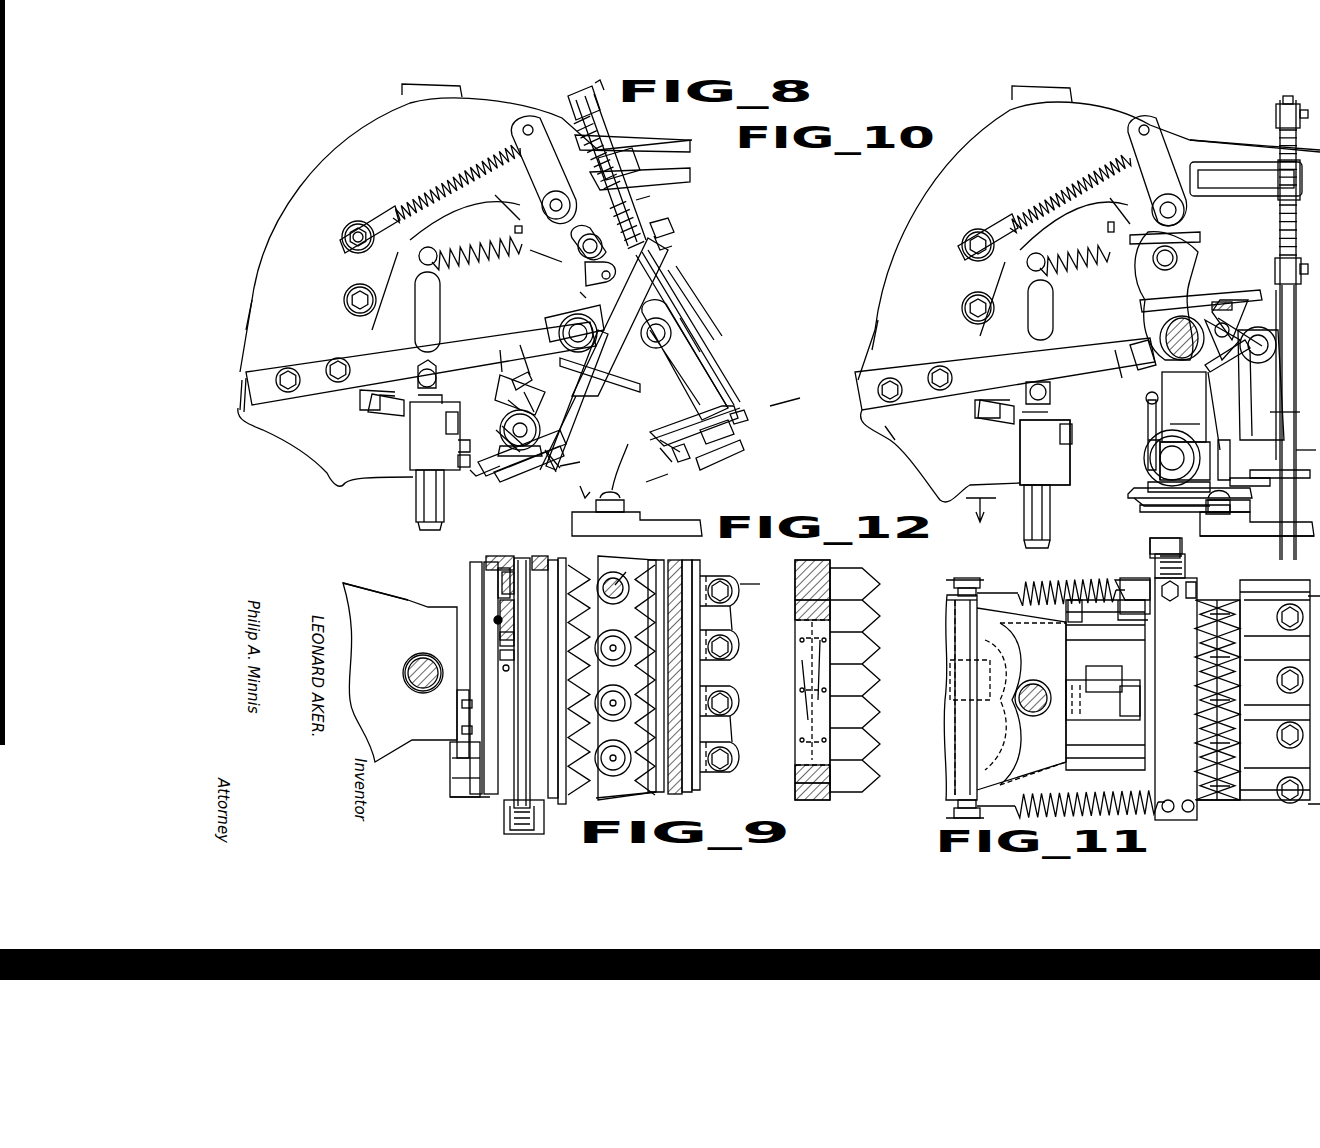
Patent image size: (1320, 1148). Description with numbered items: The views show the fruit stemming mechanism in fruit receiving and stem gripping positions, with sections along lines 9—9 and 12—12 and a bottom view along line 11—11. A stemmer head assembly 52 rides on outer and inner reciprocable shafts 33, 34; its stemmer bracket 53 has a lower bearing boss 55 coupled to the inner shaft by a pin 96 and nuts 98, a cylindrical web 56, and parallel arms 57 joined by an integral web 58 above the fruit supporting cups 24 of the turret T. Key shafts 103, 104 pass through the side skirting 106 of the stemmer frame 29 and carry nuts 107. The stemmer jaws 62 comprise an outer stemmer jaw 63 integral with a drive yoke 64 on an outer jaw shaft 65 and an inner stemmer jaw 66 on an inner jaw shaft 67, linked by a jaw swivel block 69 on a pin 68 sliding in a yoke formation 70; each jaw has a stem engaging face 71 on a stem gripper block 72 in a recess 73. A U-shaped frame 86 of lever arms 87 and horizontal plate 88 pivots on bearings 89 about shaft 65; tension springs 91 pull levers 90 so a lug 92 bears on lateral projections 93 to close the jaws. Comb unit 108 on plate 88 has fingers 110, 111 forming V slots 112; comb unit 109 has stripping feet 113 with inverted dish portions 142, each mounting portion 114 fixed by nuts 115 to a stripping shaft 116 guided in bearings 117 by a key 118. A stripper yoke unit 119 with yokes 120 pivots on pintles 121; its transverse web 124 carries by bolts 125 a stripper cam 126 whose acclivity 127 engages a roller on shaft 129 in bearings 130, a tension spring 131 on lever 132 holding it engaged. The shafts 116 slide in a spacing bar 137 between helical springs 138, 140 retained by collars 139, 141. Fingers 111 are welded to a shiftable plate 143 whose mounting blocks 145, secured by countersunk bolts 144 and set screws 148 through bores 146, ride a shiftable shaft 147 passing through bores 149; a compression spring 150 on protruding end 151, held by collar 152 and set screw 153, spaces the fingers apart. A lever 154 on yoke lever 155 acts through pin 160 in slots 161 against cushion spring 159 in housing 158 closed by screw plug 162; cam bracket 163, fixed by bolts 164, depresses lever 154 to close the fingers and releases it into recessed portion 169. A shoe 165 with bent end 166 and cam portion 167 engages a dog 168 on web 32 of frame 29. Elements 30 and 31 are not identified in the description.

In FIG. 8, the section line 9— 9 is at (786, 392).
In FIG. 10, the section line 11— 11 is at (981, 515).
In FIG. 8, the section line 12— 12 is at (586, 490).
In FIG. 8, the fruit supporting cups 24 is at (626, 504).
In FIG. 10, the fruit supporting cups 24 is at (1226, 506).
In FIG. 9, the fruit supporting cups 24 is at (618, 608).
In FIG. 8, the stemmer frame 29 is at (292, 236).
In FIG. 10, the stemmer frame 29 is at (893, 280).
In FIG. 12, the stemmer frame 29 is at (366, 586).
In FIG. 8, the mounting tab 30 is at (400, 92).
In FIG. 10, the mounting tab 30 is at (1012, 92).
In FIG. 8, the post 31 is at (412, 488).
In FIG. 10, the post 31 is at (1056, 468).
In FIG. 12, the post 31 is at (410, 668).
In FIG. 11, the post 31 is at (1018, 714).
In FIG. 8, the web 32 is at (384, 400).
In FIG. 10, the web 32 is at (984, 408).
In FIG. 12, the web 32 is at (362, 660).
In FIG. 11, the web 32 is at (950, 708).
In FIG. 8, the outer reciprocable shaft 33 is at (424, 500).
In FIG. 10, the outer reciprocable shaft 33 is at (1030, 510).
In FIG. 12, the outer reciprocable shaft 33 is at (428, 656).
In FIG. 11, the outer reciprocable shaft 33 is at (1034, 690).
In FIG. 8, the inner reciprocable shaft 34 is at (418, 522).
In FIG. 10, the inner reciprocable shaft 34 is at (1026, 538).
In FIG. 12, the inner reciprocable shaft 34 is at (430, 688).
In FIG. 11, the inner reciprocable shaft 34 is at (1030, 712).
In FIG. 8, the stemmer head assembly 52 is at (697, 316).
In FIG. 9, the stemmer head assembly 52 is at (500, 656).
In FIG. 11, the stemmer head assembly 52 is at (1276, 594).
In FIG. 8, the stemmer bracket 53 is at (486, 286).
In FIG. 10, the stemmer bracket 53 is at (992, 332).
In FIG. 10, the lower bearing boss 55 is at (1014, 402).
In FIG. 8, the cylindrical web 56 is at (395, 274).
In FIG. 10, the cylindrical web 56 is at (1000, 282).
In FIG. 11, the cylindrical web 56 is at (950, 656).
In FIG. 8, the parallel arms 57 is at (634, 311).
In FIG. 10, the parallel arms 57 is at (1116, 303).
In FIG. 11, the parallel arms 57 is at (1078, 644).
In FIG. 8, the integral web 58 is at (618, 281).
In FIG. 10, the integral web 58 is at (1222, 300).
In FIG. 8, the stemmer jaws 62 is at (586, 388).
In FIG. 10, the stemmer jaws 62 is at (1206, 402).
In FIG. 9, the stemmer jaws 62 is at (672, 768).
In FIG. 11, the stemmer jaws 62 is at (1232, 592).
In FIG. 8, the outer stemmer jaw 63 is at (572, 404).
In FIG. 9, the outer stemmer jaw 63 is at (560, 676).
In FIG. 11, the outer stemmer jaw 63 is at (1198, 820).
In FIG. 8, the drive yoke 64 is at (592, 236).
In FIG. 10, the drive yoke 64 is at (1178, 248).
In FIG. 8, the outer jaw shaft 65 is at (578, 333).
In FIG. 10, the outer jaw shaft 65 is at (1178, 330).
In FIG. 8, the inner stemmer jaw 66 is at (677, 392).
In FIG. 10, the inner stemmer jaw 66 is at (1264, 423).
In FIG. 9, the inner stemmer jaw 66 is at (716, 576).
In FIG. 8, the inner jaw shaft 67 is at (656, 333).
In FIG. 10, the inner jaw shaft 67 is at (1258, 345).
In FIG. 10, the pin 68 is at (1226, 302).
In FIG. 10, the jaw swivel block 69 is at (1216, 330).
In FIG. 10, the yoke formation 70 is at (1258, 316).
In FIG. 8, the stem engaging face 71 is at (562, 470).
In FIG. 9, the stem engaging face 71 is at (648, 562).
In FIG. 8, the stem gripper block 72 is at (574, 452).
In FIG. 9, the stem gripper block 72 is at (688, 562).
In FIG. 8, the recess 73 is at (542, 470).
In FIG. 8, the U-shaped frame 86 is at (586, 369).
In FIG. 10, the U-shaped frame 86 is at (1162, 380).
In FIG. 9, the U-shaped frame 86 is at (482, 552).
In FIG. 8, the lever arms 87 is at (540, 386).
In FIG. 10, the lever arms 87 is at (1186, 403).
In FIG. 9, the lever arms 87 is at (504, 552).
In FIG. 8, the horizontal plate 88 is at (500, 472).
In FIG. 10, the horizontal plate 88 is at (1185, 508).
In FIG. 9, the horizontal plate 88 is at (796, 584).
In FIG. 11, the horizontal plate 88 is at (1170, 596).
In FIG. 8, the bearing 89 is at (594, 334).
In FIG. 8, the lever 90 is at (580, 292).
In FIG. 8, the tension spring 91 is at (484, 236).
In FIG. 10, the tension spring 91 is at (1076, 232).
In FIG. 11, the tension spring 91 is at (1080, 582).
In FIG. 8, the lug 92 is at (520, 446).
In FIG. 10, the lug 92 is at (1196, 480).
In FIG. 9, the lug 92 is at (552, 556).
In FIG. 8, the lateral projections 93 is at (566, 438).
In FIG. 9, the lateral projections 93 is at (572, 556).
In FIG. 8, the pin 96 is at (442, 366).
In FIG. 10, the pin 96 is at (1028, 416).
In FIG. 8, the nuts 98 is at (438, 423).
In FIG. 10, the nuts 98 is at (1062, 428).
In FIG. 8, the horizontal shaft 103 is at (346, 238).
In FIG. 10, the horizontal shaft 103 is at (965, 245).
In FIG. 11, the horizontal shaft 103 is at (964, 578).
In FIG. 8, the shaft 104 is at (345, 300).
In FIG. 10, the shaft 104 is at (962, 306).
In FIG. 11, the shaft 104 is at (972, 576).
In FIG. 8, the side skirting 106 is at (392, 160).
In FIG. 10, the side skirting 106 is at (994, 185).
In FIG. 8, the nuts 107 is at (350, 232).
In FIG. 10, the nuts 107 is at (960, 238).
In FIG. 11, the nuts 107 is at (950, 582).
In FIG. 8, the comb unit 108 is at (566, 484).
In FIG. 10, the comb unit 108 is at (1296, 508).
In FIG. 11, the comb unit 108 is at (938, 607).
In FIG. 8, the comb unit 109 is at (700, 462).
In FIG. 10, the comb unit 109 is at (1212, 514).
In FIG. 9, the comb unit 109 is at (746, 582).
In FIG. 11, the comb unit 109 is at (1200, 718).
In FIG. 9, the fingers 110 is at (730, 671).
In FIG. 11, the fingers 110 is at (1248, 600).
In FIG. 9, the fingers 111 is at (722, 685).
In FIG. 11, the fingers 111 is at (1249, 711).
In FIG. 10, the V slots 112 is at (1295, 415).
In FIG. 9, the V slots 112 is at (884, 602).
In FIG. 11, the V slots 112 is at (1300, 578).
In FIG. 8, the stripping feet 113 is at (670, 474).
In FIG. 10, the stripping feet 113 is at (1285, 480).
In FIG. 9, the stripping feet 113 is at (666, 614).
In FIG. 11, the stripping feet 113 is at (1200, 640).
In FIG. 8, the mounting portion 114 is at (712, 444).
In FIG. 10, the mounting portion 114 is at (1240, 480).
In FIG. 9, the mounting portion 114 is at (736, 586).
In FIG. 11, the mounting portion 114 is at (1277, 684).
In FIG. 8, the nuts 115 is at (740, 436).
In FIG. 10, the nuts 115 is at (1308, 461).
In FIG. 9, the nuts 115 is at (734, 652).
In FIG. 8, the stripping shaft 116 is at (576, 94).
In FIG. 10, the stripping shaft 116 is at (1298, 380).
In FIG. 9, the stripping shaft 116 is at (714, 614).
In FIG. 11, the stripping shaft 116 is at (1314, 701).
In FIG. 8, the spaced bearings 117 is at (694, 303).
In FIG. 10, the spaced bearings 117 is at (1298, 375).
In FIG. 8, the longitudinal key 118 is at (690, 338).
In FIG. 8, the stripper yoke unit 119 is at (694, 166).
In FIG. 10, the stripper yoke unit 119 is at (1240, 142).
In FIG. 8, the parallel yokes 120 is at (664, 152).
In FIG. 10, the parallel yokes 120 is at (1212, 176).
In FIG. 8, the pintles 121 is at (548, 202).
In FIG. 10, the pintles 121 is at (1168, 210).
In FIG. 8, the transverse web 124 is at (494, 206).
In FIG. 10, the transverse web 124 is at (1116, 208).
In FIG. 8, the bolts 125 is at (506, 193).
In FIG. 10, the bolts 125 is at (1124, 196).
In FIG. 8, the stripper cam 126 is at (528, 218).
In FIG. 10, the stripper cam 126 is at (1150, 230).
In FIG. 8, the acclivity 127 is at (542, 248).
In FIG. 10, the acclivity 127 is at (1144, 252).
In FIG. 8, the shaft 129 is at (598, 252).
In FIG. 10, the shaft 129 is at (1178, 256).
In FIG. 11, the shaft 129 is at (1100, 668).
In FIG. 8, the bearings 130 is at (595, 246).
In FIG. 10, the bearings 130 is at (1180, 266).
In FIG. 8, the tension spring 131 is at (467, 170).
In FIG. 10, the tension spring 131 is at (1072, 168).
In FIG. 8, the lever 132 is at (546, 151).
In FIG. 10, the lever 132 is at (1162, 165).
In FIG. 8, the stripping shaft spacing bar 137 is at (620, 168).
In FIG. 10, the stripping shaft spacing bar 137 is at (1282, 182).
In FIG. 8, the helical spring 138 is at (644, 206).
In FIG. 8, the adjustable collar 139 is at (658, 220).
In FIG. 8, the helical springs 140 is at (606, 126).
In FIG. 10, the helical springs 140 is at (1297, 330).
In FIG. 8, the adjustable collar 141 is at (574, 102).
In FIG. 10, the adjustable collar 141 is at (1278, 112).
In FIG. 8, the inverted dish portion 142 is at (500, 430).
In FIG. 10, the inverted dish portion 142 is at (1210, 464).
In FIG. 11, the inverted dish portion 142 is at (1277, 701).
In FIG. 12, the shiftable plate 143 is at (486, 746).
In FIG. 9, the shiftable plate 143 is at (794, 656).
In FIG. 9, the countersunk bolts 144 is at (813, 683).
In FIG. 9, the mounting block 145 is at (494, 578).
In FIG. 9, the aligned bores 146 is at (524, 683).
In FIG. 8, the shiftable shaft 147 is at (520, 430).
In FIG. 10, the shiftable shaft 147 is at (1185, 548).
In FIG. 9, the shiftable shaft 147 is at (504, 668).
In FIG. 9, the set screws 148 is at (496, 588).
In FIG. 10, the bores 149 is at (1174, 458).
In FIG. 9, the bores 149 is at (510, 820).
In FIG. 9, the compression spring 150 is at (510, 834).
In FIG. 11, the compression spring 150 is at (1190, 560).
In FIG. 10, the protruding end 151 is at (1172, 458).
In FIG. 11, the protruding end 151 is at (1190, 574).
In FIG. 8, the collar 152 is at (534, 404).
In FIG. 10, the collar 152 is at (1150, 466).
In FIG. 9, the collar 152 is at (540, 834).
In FIG. 11, the collar 152 is at (1186, 552).
In FIG. 8, the set screw 153 is at (508, 400).
In FIG. 10, the set screw 153 is at (1185, 416).
In FIG. 8, the lever 154 is at (512, 384).
In FIG. 10, the lever 154 is at (1146, 414).
In FIG. 8, the yoke lever 155 is at (414, 388).
In FIG. 10, the yoke lever 155 is at (1146, 446).
In FIG. 9, the yoke lever 155 is at (498, 634).
In FIG. 11, the yoke lever 155 is at (1140, 740).
In FIG. 9, the housing 158 is at (492, 566).
In FIG. 9, the cushion spring 159 is at (490, 556).
In FIG. 9, the pin 160 is at (496, 620).
In FIG. 9, the aligned slots 161 is at (496, 608).
In FIG. 10, the screw plug 162 is at (1130, 494).
In FIG. 8, the cam bracket 163 is at (535, 328).
In FIG. 10, the cam bracket 163 is at (1110, 344).
In FIG. 8, the bolts 164 is at (302, 388).
In FIG. 10, the bolts 164 is at (895, 382).
In FIG. 8, the shoe 165 is at (494, 458).
In FIG. 10, the shoe 165 is at (1156, 498).
In FIG. 12, the shoe 165 is at (452, 792).
In FIG. 11, the shoe 165 is at (1146, 574).
In FIG. 8, the downwardly bent end 166 is at (460, 460).
In FIG. 10, the downwardly bent end 166 is at (1122, 498).
In FIG. 12, the downwardly bent end 166 is at (452, 778).
In FIG. 11, the downwardly bent end 166 is at (1118, 578).
In FIG. 8, the cam portion 167 is at (458, 446).
In FIG. 12, the cam portion 167 is at (452, 766).
In FIG. 11, the cam portion 167 is at (1118, 604).
In FIG. 8, the dog 168 is at (440, 436).
In FIG. 10, the dog 168 is at (1045, 452).
In FIG. 12, the dog 168 is at (456, 750).
In FIG. 11, the dog 168 is at (1068, 608).
In FIG. 8, the recessed portion 169 is at (507, 332).
In FIG. 10, the recessed portion 169 is at (1146, 342).
In FIG. 8, the turret T is at (690, 530).
In FIG. 10, the turret T is at (1306, 538).
In FIG. 9, the turret T is at (700, 568).